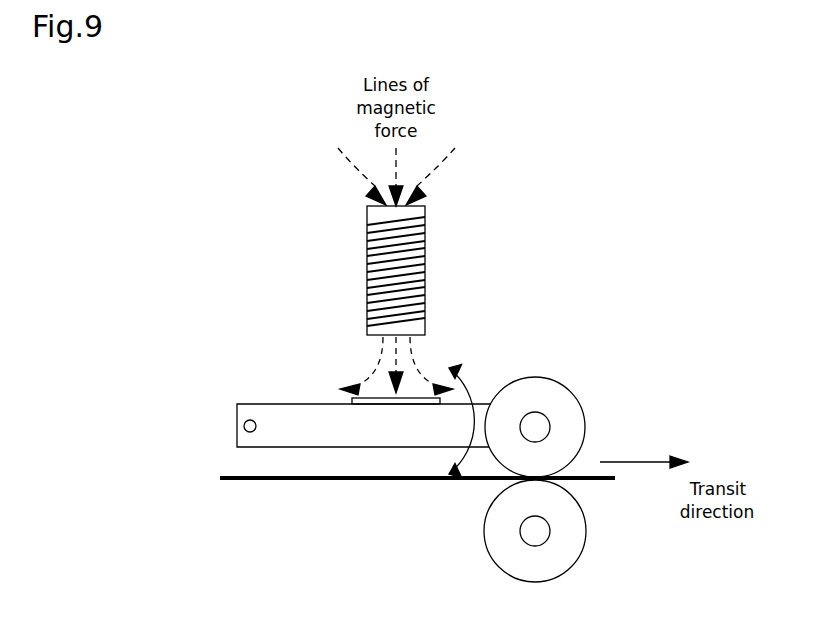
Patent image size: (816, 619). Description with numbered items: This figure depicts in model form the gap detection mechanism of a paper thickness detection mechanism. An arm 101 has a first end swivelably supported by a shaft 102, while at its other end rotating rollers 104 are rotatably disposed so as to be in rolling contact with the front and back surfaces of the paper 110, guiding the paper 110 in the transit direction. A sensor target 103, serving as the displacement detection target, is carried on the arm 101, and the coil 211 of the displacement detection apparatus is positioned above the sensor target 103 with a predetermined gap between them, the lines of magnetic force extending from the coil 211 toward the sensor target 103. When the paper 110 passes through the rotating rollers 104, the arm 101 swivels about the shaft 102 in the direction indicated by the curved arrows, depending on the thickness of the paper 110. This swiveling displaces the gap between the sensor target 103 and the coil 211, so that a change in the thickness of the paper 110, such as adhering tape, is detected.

The arm 101 is at (308, 422).
The shaft 102 is at (245, 424).
The sensor target 103 is at (372, 403).
The rotating rollers 104 is at (558, 403).
The paper 110 is at (330, 481).
The coil 211 is at (410, 273).